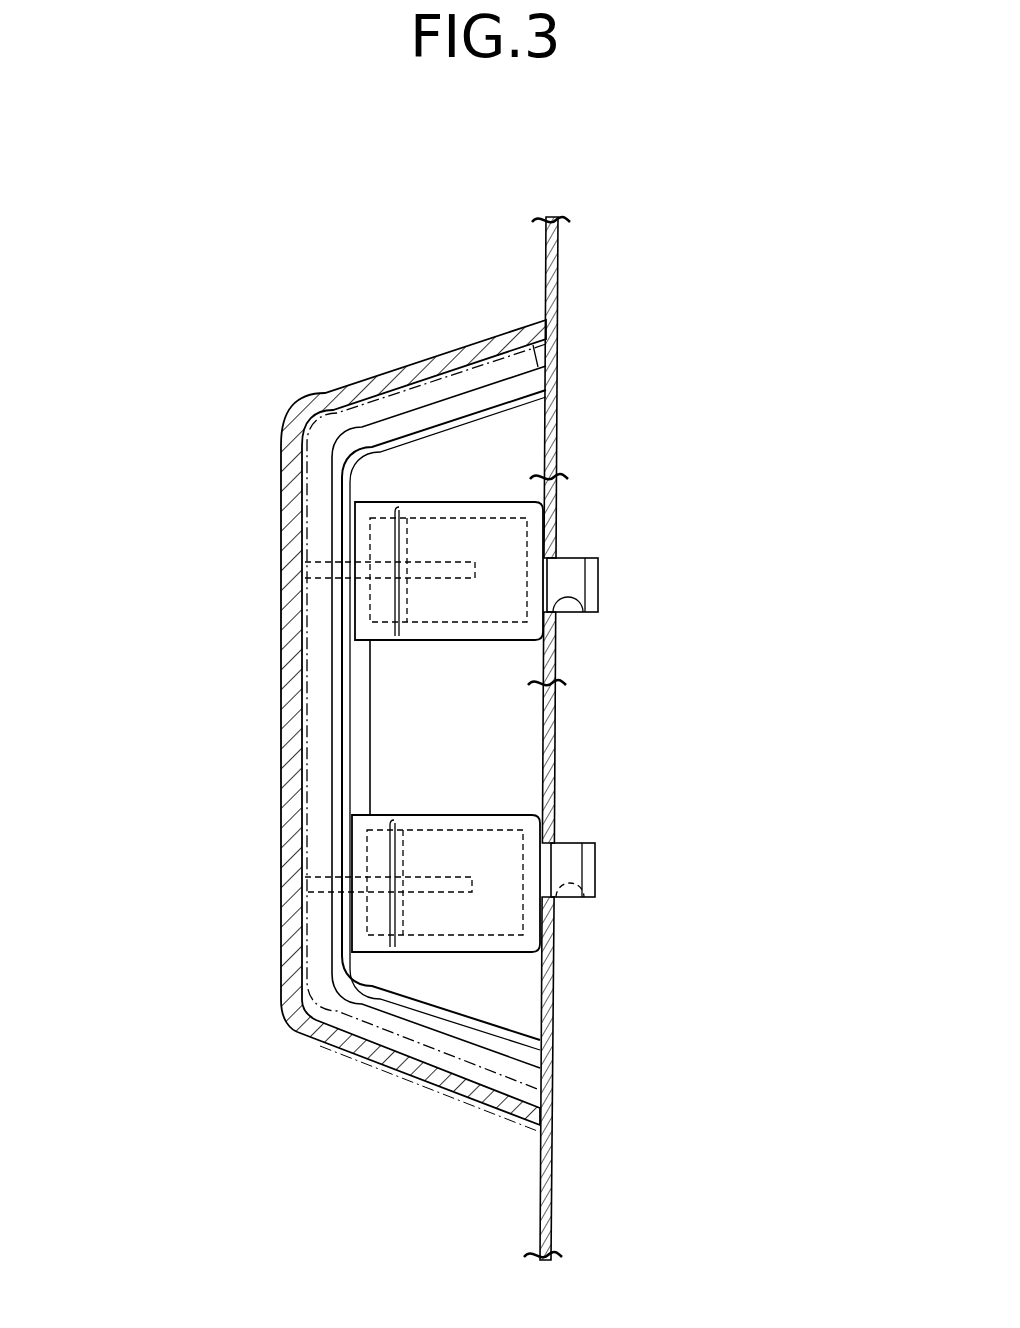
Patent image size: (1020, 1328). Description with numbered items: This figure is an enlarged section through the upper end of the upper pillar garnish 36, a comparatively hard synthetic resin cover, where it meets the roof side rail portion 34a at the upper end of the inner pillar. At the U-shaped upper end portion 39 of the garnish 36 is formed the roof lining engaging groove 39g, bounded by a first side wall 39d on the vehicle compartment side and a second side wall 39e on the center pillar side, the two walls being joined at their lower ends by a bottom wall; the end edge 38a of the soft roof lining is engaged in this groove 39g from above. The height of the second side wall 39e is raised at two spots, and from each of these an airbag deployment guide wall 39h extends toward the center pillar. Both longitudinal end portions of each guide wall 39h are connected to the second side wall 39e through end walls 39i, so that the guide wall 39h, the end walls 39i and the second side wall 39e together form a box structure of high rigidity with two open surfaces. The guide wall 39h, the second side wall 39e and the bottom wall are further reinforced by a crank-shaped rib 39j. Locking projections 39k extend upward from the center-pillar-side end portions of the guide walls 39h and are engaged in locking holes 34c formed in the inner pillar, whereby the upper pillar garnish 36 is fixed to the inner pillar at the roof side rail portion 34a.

The upper pillar garnish 36 is at (256, 422).
The roof side rail portion 34a is at (555, 440).
The locking holes 34c is at (580, 610).
The end edge 38a is at (425, 1058).
The upper end portion 39 is at (272, 563).
The first side wall 39d is at (283, 768).
The second side wall 39e is at (358, 690).
The roof lining engaging groove 39g is at (313, 917).
The airbag deployment guide walls 39h is at (477, 615).
The end walls 39i is at (447, 500).
The crank-shaped rib 39j is at (470, 562).
The locking projections 39k is at (580, 575).